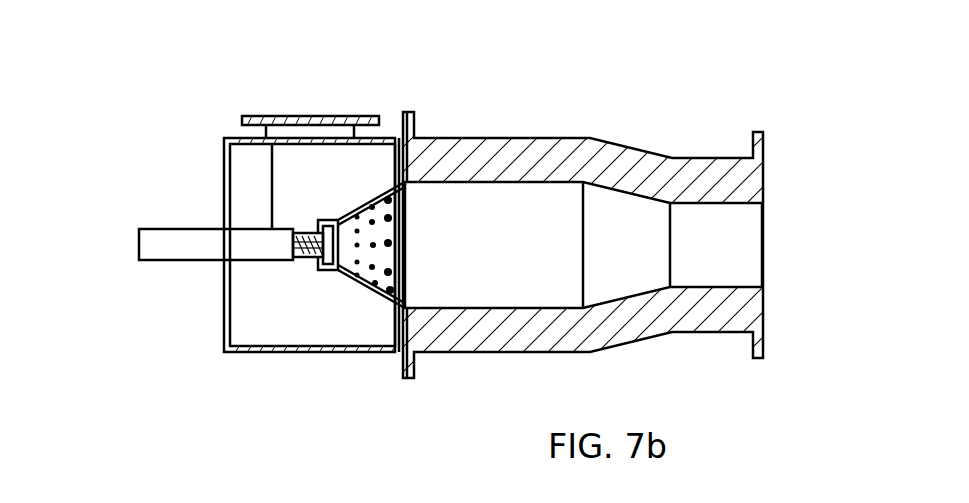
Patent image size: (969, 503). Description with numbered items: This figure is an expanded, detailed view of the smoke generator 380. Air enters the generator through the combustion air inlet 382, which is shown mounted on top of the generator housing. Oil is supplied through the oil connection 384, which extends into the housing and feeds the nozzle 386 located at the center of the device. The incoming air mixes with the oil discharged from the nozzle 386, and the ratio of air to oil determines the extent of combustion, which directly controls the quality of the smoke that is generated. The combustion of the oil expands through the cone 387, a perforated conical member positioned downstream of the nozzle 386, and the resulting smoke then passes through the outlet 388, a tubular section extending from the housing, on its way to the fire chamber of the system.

The smoke generator 380 is at (246, 188).
The combustion air inlet 382 is at (292, 69).
The oil connection 384 is at (185, 194).
The nozzle 386 is at (250, 344).
The cone 387 is at (460, 160).
The outlet 388 is at (559, 250).